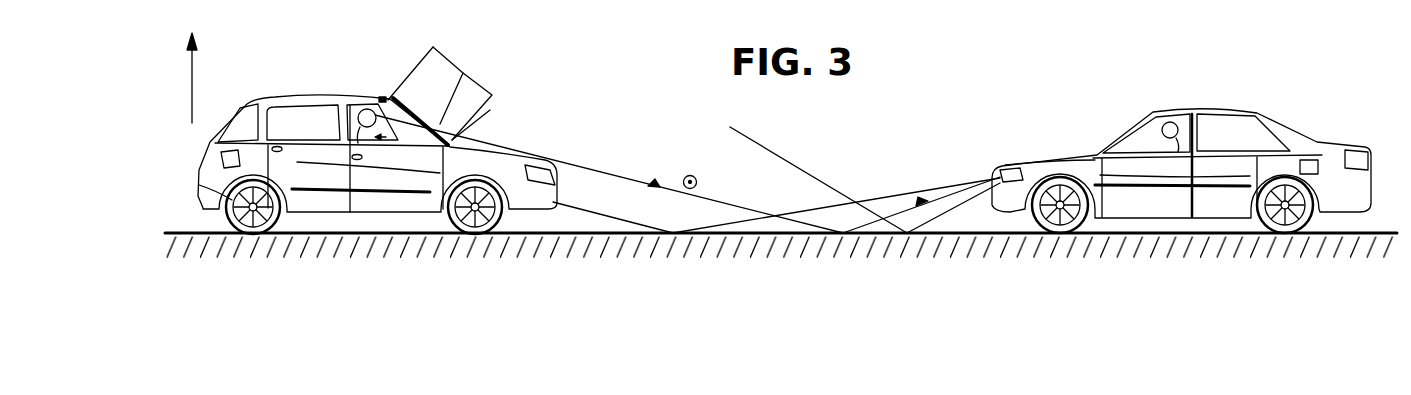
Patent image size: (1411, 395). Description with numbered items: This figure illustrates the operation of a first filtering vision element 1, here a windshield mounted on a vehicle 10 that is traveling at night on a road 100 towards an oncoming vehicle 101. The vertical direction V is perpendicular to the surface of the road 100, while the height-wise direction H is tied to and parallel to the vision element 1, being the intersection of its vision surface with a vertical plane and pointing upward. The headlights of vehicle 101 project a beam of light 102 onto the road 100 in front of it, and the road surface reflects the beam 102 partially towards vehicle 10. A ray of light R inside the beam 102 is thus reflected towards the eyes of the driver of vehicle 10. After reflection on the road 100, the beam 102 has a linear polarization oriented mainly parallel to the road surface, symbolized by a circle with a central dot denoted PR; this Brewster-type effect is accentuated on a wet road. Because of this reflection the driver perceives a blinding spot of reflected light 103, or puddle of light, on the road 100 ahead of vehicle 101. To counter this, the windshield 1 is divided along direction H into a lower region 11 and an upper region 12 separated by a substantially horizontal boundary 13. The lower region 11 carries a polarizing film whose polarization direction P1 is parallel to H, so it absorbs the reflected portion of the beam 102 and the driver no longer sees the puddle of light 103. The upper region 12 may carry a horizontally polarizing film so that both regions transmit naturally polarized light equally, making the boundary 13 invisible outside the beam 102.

The vehicle 10 is at (297, 96).
The vision element 1 is at (384, 98).
The lower region 11 is at (472, 81).
The upper region 12 is at (436, 49).
The intermediate boundary 13 is at (425, 123).
The direction of polarization P1 is at (490, 110).
The height-wise direction H is at (389, 137).
The vertical direction V is at (182, 69).
The ray of light R is at (672, 188).
The polarization orientation PR is at (697, 179).
The road surface 100 is at (415, 236).
The oncoming vehicle 101 is at (1243, 110).
The beam of light 102 is at (892, 198).
The spot of reflected light 103 is at (885, 234).